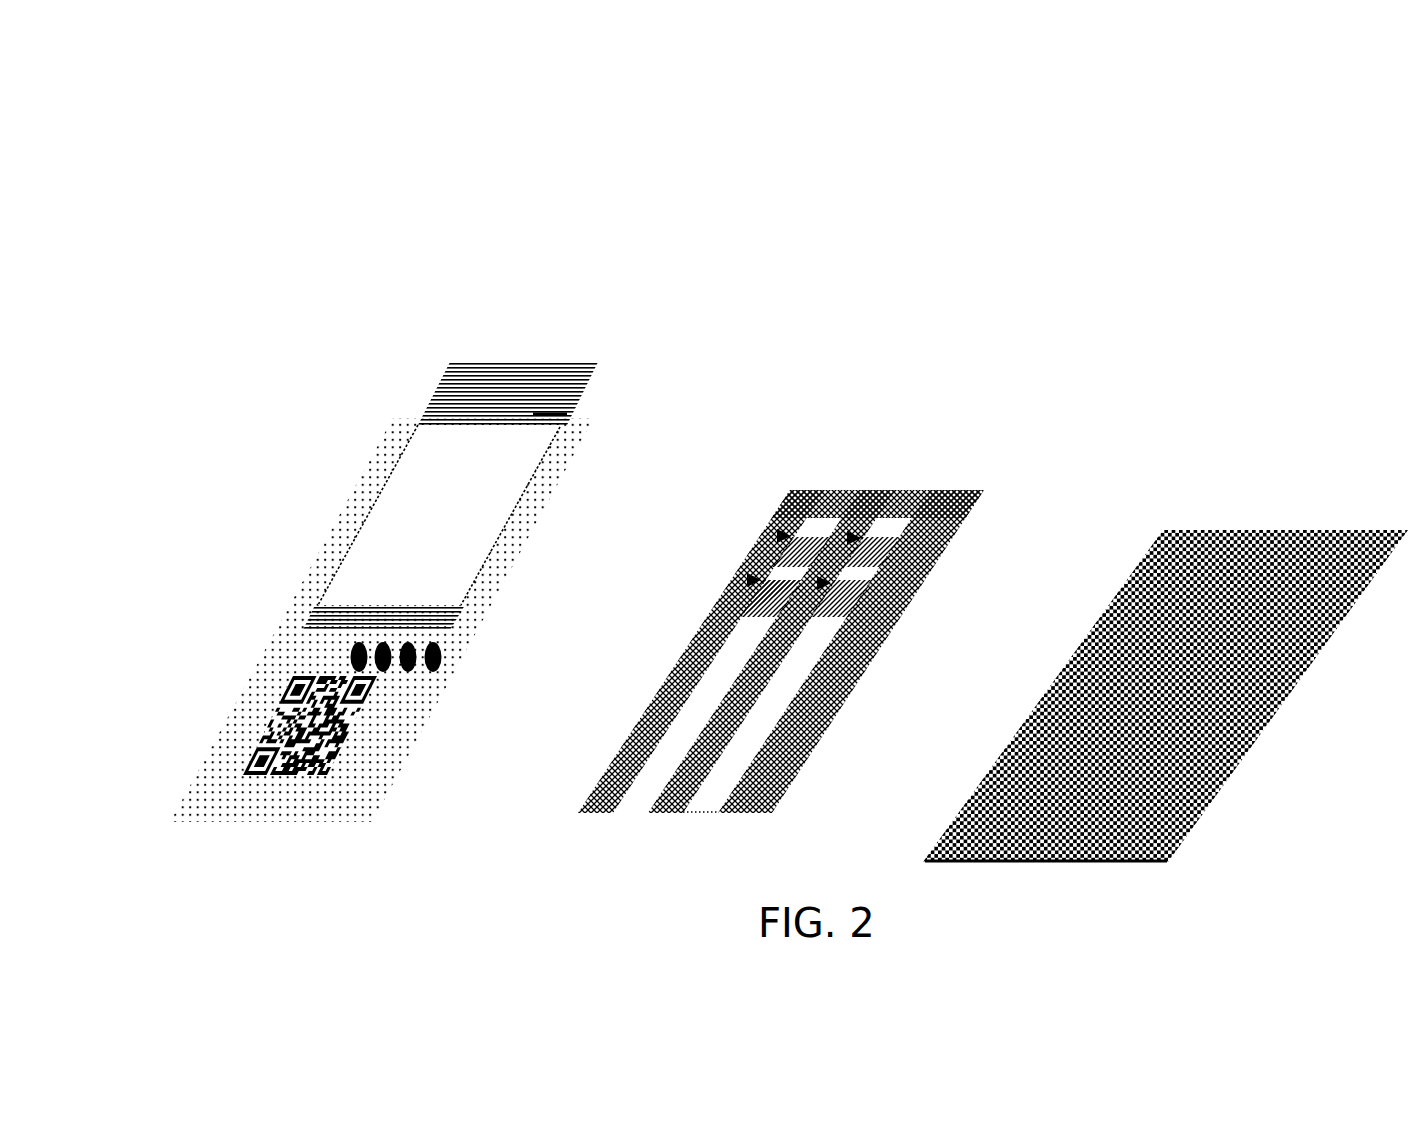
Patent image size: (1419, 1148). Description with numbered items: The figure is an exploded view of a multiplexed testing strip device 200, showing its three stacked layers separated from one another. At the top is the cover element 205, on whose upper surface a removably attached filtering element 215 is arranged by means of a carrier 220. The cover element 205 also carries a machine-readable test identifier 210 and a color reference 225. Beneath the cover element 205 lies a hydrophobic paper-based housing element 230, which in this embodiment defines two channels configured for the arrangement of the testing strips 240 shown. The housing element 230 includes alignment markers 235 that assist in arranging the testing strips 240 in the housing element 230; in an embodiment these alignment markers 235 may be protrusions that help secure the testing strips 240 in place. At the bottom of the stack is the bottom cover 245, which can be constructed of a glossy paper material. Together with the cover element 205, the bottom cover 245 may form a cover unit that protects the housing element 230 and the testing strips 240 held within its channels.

The sensor assembly 200 is at (172, 95).
The cover element 205 is at (367, 443).
The machine-readable test identifier 210 is at (273, 687).
The filtering element 215 is at (496, 480).
The carrier 220 is at (488, 377).
The color reference 225 is at (350, 636).
The hydrophobic paper-based housing element 230 is at (662, 812).
The alignment markers 235 is at (783, 530).
The testing strips 240 is at (878, 555).
The bottom cover 245 is at (1243, 530).